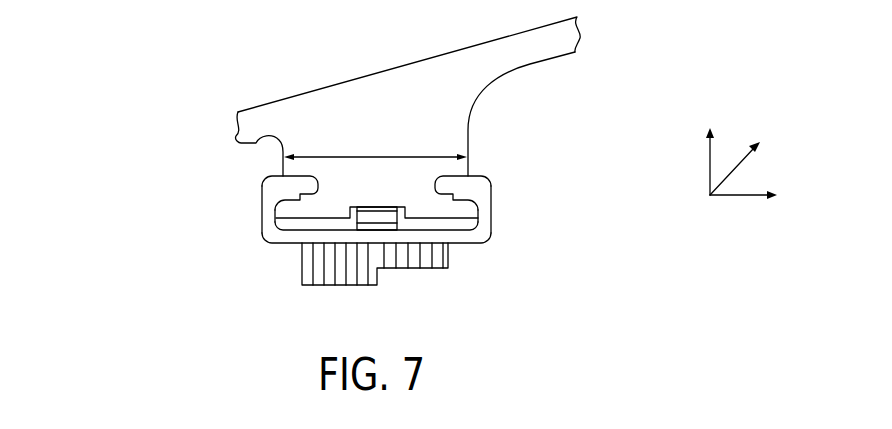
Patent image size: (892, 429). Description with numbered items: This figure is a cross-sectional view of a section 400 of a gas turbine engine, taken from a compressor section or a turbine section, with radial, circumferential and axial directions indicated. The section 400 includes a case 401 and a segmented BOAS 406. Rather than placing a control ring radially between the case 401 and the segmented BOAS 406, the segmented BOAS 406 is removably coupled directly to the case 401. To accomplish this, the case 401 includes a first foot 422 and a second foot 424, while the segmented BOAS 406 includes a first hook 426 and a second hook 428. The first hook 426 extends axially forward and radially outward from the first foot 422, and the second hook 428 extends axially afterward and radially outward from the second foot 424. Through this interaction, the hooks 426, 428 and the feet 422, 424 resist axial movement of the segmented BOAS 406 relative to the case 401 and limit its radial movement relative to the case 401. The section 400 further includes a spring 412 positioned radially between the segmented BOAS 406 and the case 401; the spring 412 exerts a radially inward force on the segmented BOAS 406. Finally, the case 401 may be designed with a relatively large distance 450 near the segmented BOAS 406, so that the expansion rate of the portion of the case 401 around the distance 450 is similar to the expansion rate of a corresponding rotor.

The section 400 is at (111, 80).
The case 401 is at (332, 97).
The distance 450 is at (373, 156).
The segmented BOAS 406 is at (472, 238).
The first hook 426 is at (264, 210).
The second hook 428 is at (487, 213).
The first foot 422 is at (290, 208).
The second foot 424 is at (462, 208).
The spring 412 is at (388, 228).